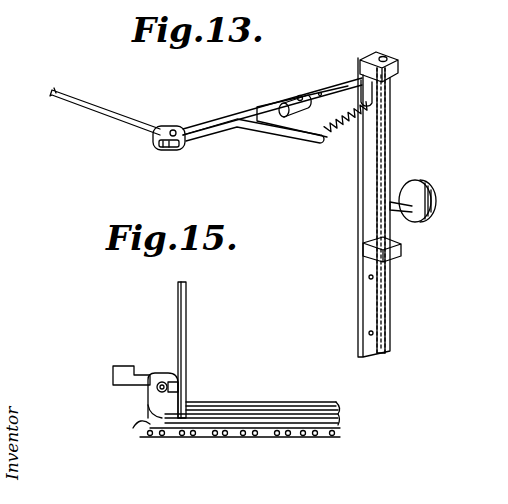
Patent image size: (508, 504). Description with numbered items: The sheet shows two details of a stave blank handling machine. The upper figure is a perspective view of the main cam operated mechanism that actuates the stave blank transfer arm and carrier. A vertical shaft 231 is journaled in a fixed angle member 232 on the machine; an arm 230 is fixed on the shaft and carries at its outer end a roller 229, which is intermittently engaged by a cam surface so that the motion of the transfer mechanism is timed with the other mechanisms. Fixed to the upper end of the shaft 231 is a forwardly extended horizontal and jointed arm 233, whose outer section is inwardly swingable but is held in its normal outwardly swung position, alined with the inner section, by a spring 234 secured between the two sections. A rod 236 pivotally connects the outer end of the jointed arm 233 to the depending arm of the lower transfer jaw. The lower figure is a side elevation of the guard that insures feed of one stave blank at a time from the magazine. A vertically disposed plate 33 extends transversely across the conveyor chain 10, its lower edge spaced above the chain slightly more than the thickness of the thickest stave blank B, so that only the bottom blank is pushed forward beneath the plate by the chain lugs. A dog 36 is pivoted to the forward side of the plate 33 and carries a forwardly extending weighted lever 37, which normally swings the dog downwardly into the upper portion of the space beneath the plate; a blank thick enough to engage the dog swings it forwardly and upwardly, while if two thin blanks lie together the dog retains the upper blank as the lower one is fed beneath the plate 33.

In FIG. 13, the rod 236 is at (115, 115).
In FIG. 13, the jointed arm 233 is at (312, 92).
In FIG. 13, the spring 234 is at (354, 123).
In FIG. 13, the angle member 232 is at (368, 198).
In FIG. 13, the vertical shaft 231 is at (388, 158).
In FIG. 13, the roller 229 is at (427, 188).
In FIG. 13, the arm 230 is at (397, 210).
In FIG. 15, the plate 33 is at (186, 335).
In FIG. 15, the weighted lever 37 is at (125, 375).
In FIG. 15, the dog 36 is at (157, 398).
In FIG. 15, the stave blank B is at (338, 405).
In FIG. 15, the conveyor chain 10 is at (150, 420).